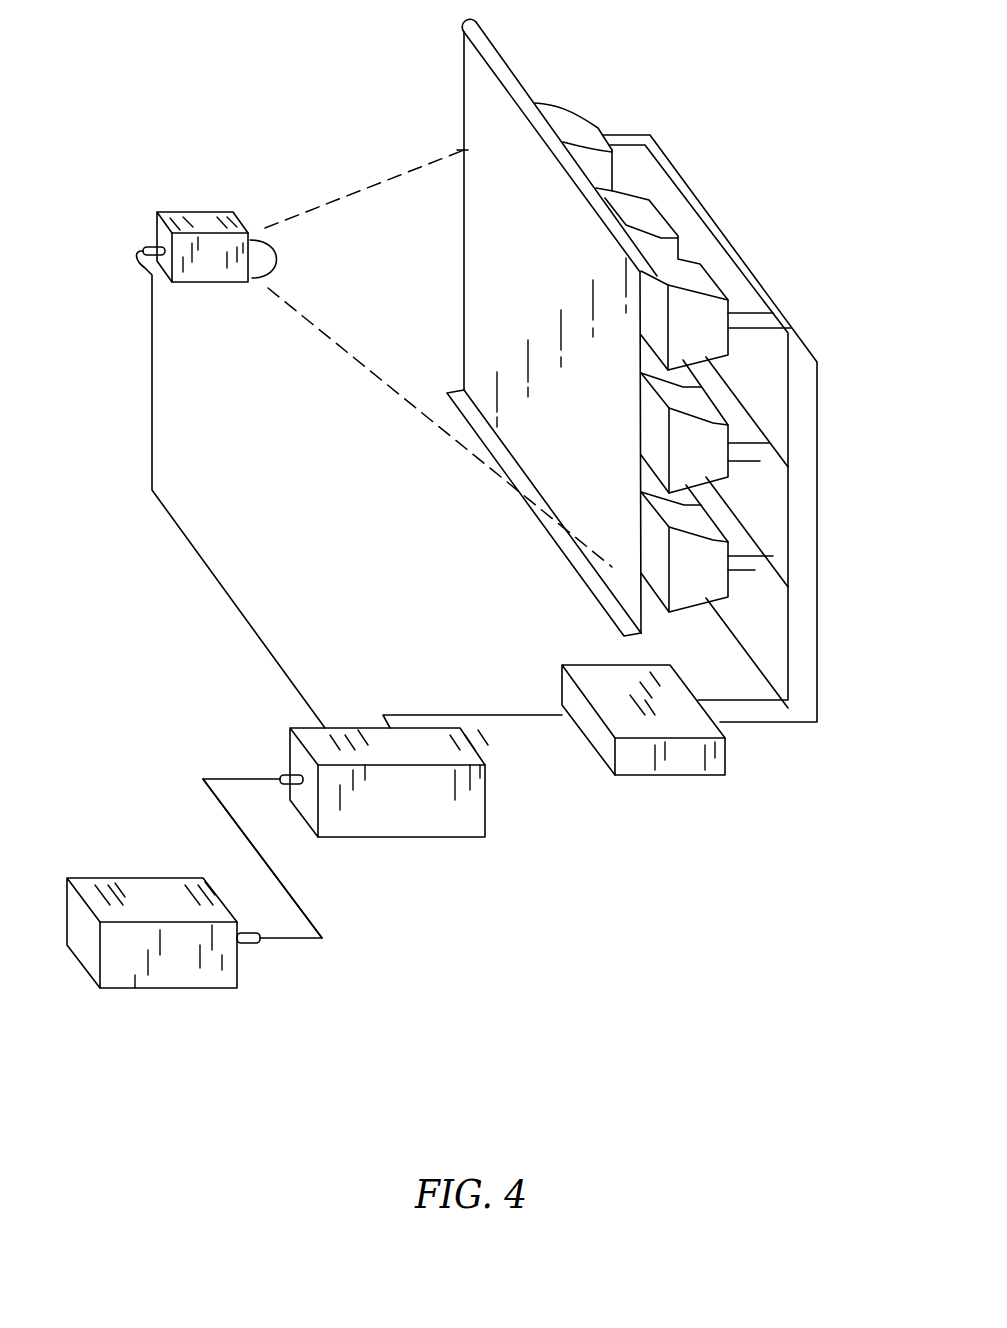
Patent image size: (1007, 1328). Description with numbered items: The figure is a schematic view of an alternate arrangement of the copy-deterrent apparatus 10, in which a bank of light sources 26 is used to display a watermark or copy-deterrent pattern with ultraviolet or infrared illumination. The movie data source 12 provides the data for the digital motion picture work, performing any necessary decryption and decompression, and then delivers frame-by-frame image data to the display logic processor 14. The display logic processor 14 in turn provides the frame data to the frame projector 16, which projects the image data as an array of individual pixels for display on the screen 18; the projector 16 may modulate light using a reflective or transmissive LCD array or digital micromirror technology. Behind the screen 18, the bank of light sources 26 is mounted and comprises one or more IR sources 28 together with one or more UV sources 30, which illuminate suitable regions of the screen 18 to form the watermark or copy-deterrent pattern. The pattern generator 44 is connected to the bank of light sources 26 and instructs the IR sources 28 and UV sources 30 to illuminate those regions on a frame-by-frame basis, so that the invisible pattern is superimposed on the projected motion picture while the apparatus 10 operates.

The copy-deterrent apparatus 10 is at (323, 98).
The movie data source 12 is at (170, 988).
The display logic processor 14 is at (403, 837).
The frame projector 16 is at (212, 283).
The screen 18 is at (513, 68).
The bank of light sources 26 is at (596, 122).
The IR sources 28 is at (630, 210).
The UV sources 30 is at (700, 281).
The pattern generator 44 is at (670, 775).